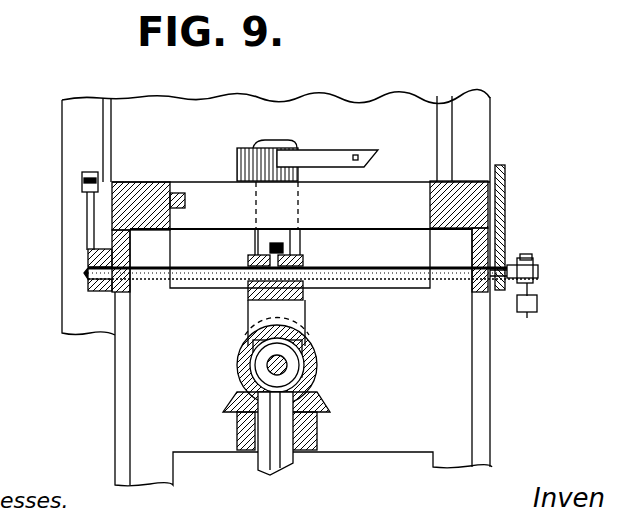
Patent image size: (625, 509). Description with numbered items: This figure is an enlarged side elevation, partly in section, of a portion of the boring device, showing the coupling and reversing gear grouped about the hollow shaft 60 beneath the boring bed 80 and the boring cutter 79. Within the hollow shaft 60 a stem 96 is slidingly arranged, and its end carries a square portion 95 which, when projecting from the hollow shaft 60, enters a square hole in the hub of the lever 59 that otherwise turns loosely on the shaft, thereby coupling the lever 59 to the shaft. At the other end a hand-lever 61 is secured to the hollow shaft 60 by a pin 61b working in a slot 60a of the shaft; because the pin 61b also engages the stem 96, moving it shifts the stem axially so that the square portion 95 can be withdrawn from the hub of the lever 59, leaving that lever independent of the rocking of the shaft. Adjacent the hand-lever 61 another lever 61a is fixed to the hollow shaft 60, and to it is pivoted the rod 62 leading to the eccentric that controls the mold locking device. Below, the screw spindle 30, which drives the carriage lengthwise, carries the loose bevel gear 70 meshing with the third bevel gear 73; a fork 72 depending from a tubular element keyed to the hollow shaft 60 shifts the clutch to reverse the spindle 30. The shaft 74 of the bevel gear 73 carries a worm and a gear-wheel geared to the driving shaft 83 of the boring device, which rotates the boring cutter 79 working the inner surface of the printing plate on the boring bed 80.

The boring bed 80 is at (378, 103).
The boring cutter 79 is at (332, 157).
The hand-lever 61 is at (506, 181).
The slot 60a is at (510, 260).
The lever 59 is at (88, 200).
The driving shaft 83 is at (302, 243).
The square portion 95 is at (88, 269).
The stem 96 is at (182, 284).
The hollow shaft 60 is at (423, 282).
The pin 61b is at (475, 288).
The rod 62 is at (537, 299).
The lever 61a is at (527, 314).
The screw spindle 30 is at (285, 360).
The bevel gear 70 is at (317, 361).
The fork 72 is at (240, 353).
The bevel gear 73 is at (330, 403).
The shaft 74 is at (267, 454).